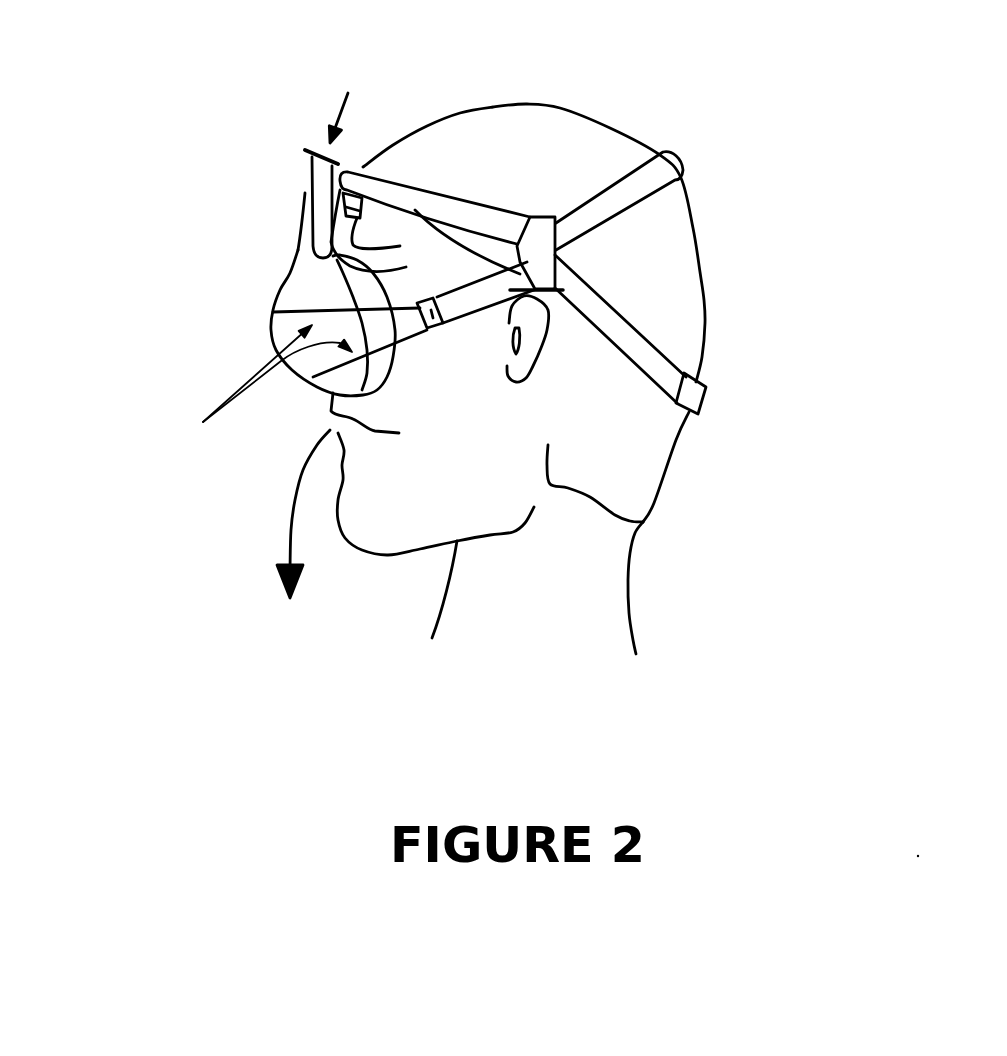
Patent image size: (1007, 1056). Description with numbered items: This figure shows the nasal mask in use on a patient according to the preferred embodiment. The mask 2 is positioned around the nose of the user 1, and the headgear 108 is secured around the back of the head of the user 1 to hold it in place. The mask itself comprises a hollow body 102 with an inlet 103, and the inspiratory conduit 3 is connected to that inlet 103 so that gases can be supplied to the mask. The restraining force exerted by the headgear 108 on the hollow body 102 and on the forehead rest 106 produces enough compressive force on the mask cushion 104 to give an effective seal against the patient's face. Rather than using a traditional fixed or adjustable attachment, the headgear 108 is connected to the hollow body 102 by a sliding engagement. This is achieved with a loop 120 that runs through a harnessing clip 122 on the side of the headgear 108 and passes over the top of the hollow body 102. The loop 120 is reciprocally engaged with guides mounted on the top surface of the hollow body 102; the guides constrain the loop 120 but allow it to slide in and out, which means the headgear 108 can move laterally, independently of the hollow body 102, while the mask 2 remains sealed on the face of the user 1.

The user 1 is at (706, 290).
The mask 2 is at (205, 232).
The inspiratory conduit 3 is at (304, 192).
The hollow body 102 is at (266, 309).
The inlet 103 is at (290, 243).
The mask cushion 104 is at (295, 242).
The forehead rest 106 is at (357, 168).
The headgear 108 is at (645, 180).
The loop 120 is at (253, 383).
The harnessing clip 122 is at (441, 282).